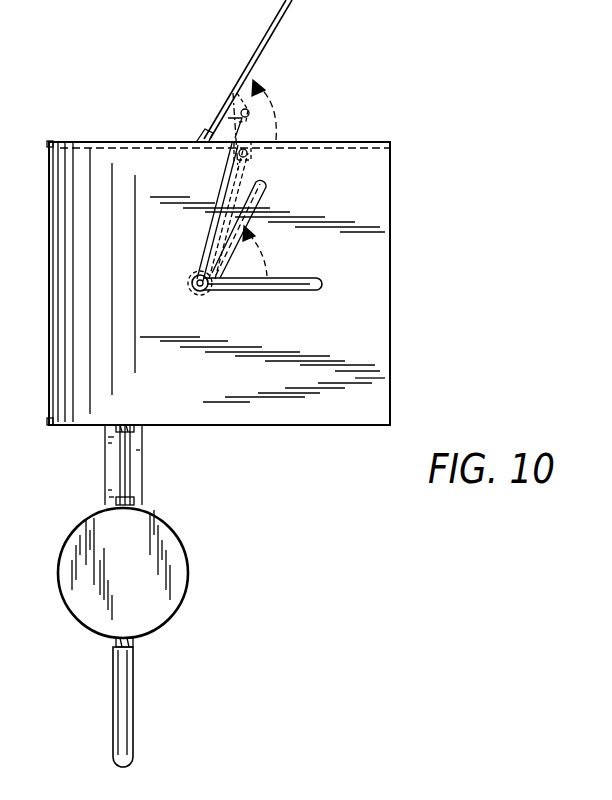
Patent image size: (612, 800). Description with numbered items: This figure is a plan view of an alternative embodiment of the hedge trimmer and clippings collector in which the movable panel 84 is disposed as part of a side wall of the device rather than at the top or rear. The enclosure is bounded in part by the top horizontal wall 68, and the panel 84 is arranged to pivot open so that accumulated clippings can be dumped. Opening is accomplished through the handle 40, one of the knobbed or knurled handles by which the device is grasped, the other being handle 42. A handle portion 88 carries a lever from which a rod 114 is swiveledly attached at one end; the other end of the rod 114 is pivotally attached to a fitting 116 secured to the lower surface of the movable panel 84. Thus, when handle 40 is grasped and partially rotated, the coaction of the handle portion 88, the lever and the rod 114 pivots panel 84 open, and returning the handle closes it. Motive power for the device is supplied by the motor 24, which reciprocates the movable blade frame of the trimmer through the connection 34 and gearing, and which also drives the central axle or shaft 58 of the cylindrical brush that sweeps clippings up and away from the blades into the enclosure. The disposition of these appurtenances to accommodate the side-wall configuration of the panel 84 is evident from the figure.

The motor 24 is at (173, 610).
The connection 34 is at (142, 470).
The handle 40 is at (303, 291).
The handle 42 is at (125, 697).
The central axle or shaft 58 is at (120, 468).
The top horizontal wall 68 is at (345, 160).
The movable panel 84 is at (256, 51).
The handle portion 88 is at (197, 296).
The rod 114 is at (228, 181).
The fitting 116 is at (240, 105).